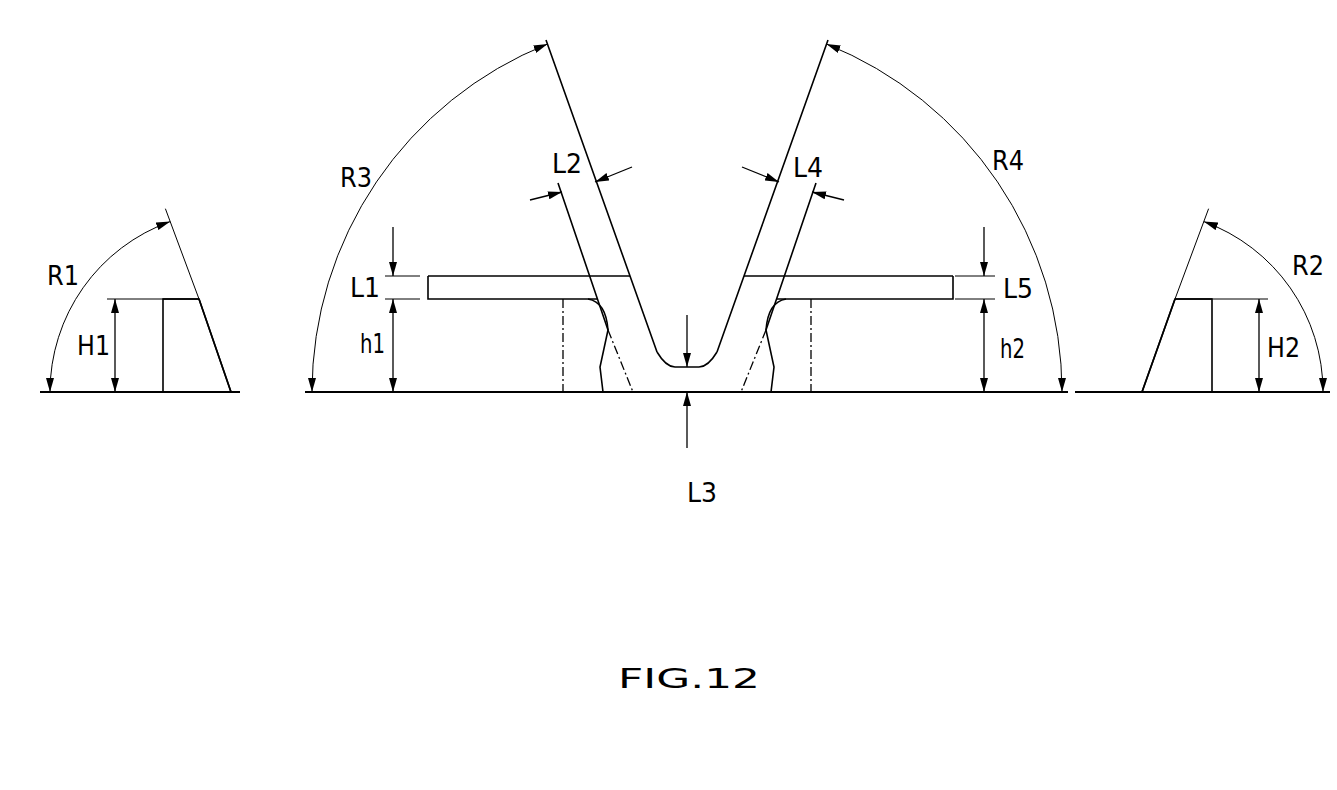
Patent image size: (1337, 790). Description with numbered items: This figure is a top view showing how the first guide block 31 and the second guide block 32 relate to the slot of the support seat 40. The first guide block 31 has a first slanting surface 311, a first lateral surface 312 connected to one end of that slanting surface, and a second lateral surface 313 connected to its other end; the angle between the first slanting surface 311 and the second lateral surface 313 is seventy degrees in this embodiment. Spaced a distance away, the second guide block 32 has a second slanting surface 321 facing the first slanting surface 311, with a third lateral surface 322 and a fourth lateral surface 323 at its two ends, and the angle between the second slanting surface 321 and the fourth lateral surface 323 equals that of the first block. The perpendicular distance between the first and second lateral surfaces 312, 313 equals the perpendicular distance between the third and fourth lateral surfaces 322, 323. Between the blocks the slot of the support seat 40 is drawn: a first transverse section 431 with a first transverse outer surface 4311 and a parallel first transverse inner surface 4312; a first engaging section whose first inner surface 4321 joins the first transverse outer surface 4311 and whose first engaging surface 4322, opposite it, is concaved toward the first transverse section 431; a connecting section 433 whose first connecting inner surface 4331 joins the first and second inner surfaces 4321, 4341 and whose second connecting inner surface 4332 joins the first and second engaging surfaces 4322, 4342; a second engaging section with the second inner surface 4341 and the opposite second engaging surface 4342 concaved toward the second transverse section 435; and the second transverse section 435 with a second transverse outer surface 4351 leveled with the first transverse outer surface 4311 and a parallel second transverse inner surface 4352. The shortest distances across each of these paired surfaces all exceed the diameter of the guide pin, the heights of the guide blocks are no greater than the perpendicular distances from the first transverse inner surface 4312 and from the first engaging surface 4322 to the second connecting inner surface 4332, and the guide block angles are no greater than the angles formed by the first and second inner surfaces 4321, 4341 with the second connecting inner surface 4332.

The first guide block 31 is at (214, 356).
The first slanting surface 311 is at (218, 349).
The first lateral surface 312 is at (182, 299).
The second lateral surface 313 is at (209, 393).
The second guide block 32 is at (1163, 348).
The second slanting surface 321 is at (1167, 327).
The third lateral surface 322 is at (1190, 300).
The fourth lateral surface 323 is at (1195, 392).
The support seat 40 is at (694, 294).
The first transverse section 431 is at (523, 285).
The first transverse outer surface 4311 is at (515, 278).
The first transverse inner surface 4312 is at (500, 300).
The first inner surface 4321 is at (638, 293).
The first engaging surface 4322 is at (600, 367).
The connecting section 433 is at (676, 450).
The first connecting inner surface 4331 is at (668, 362).
The second connecting inner surface 4332 is at (690, 380).
The second inner surface 4341 is at (733, 307).
The second engaging surface 4342 is at (773, 367).
The second transverse section 435 is at (858, 290).
The second transverse outer surface 4351 is at (920, 278).
The second transverse inner surface 4352 is at (875, 300).